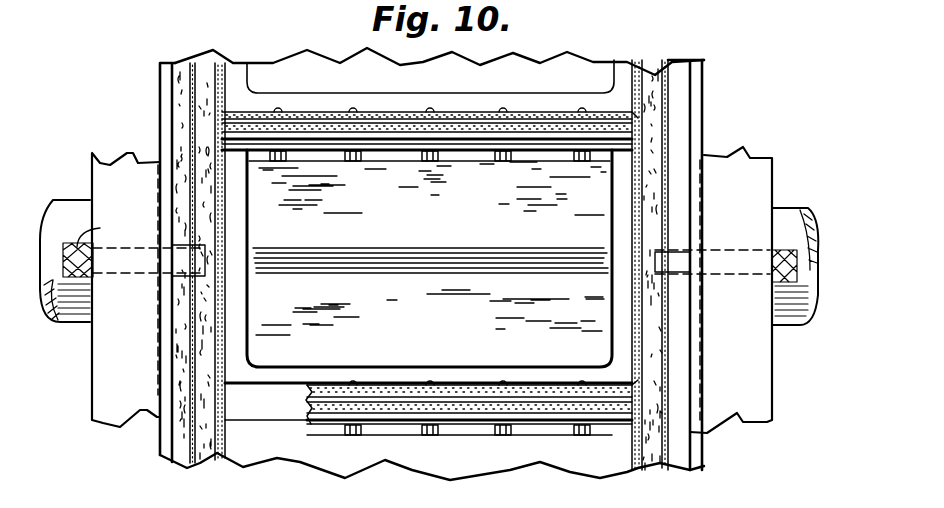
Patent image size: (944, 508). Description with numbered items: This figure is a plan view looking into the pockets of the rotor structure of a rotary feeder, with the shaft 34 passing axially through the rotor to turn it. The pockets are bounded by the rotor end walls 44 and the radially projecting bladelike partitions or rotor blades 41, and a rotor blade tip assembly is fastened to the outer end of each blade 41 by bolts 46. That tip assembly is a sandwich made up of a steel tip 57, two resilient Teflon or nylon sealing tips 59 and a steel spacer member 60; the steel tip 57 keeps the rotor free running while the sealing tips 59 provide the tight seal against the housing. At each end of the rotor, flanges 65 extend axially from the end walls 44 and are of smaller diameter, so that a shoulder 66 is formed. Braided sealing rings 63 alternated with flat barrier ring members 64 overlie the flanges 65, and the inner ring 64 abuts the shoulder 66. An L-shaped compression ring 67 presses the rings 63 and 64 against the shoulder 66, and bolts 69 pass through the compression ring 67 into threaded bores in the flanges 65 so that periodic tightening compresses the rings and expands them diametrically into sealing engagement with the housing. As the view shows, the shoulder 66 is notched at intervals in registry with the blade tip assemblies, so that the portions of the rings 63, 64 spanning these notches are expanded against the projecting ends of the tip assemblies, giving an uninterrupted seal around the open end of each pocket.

The shaft 34 is at (67, 218).
The rotor blade 41 is at (454, 106).
The rotor end wall 44 is at (318, 507).
The bolt 46 is at (353, 163).
The steel tip 57 is at (415, 150).
The sealing tip 59 is at (307, 116).
The spacer member 60 is at (353, 126).
The sealing ring 63 is at (205, 76).
The ring member 64 is at (194, 464).
The flange 65 is at (163, 97).
The shoulder 66 is at (240, 230).
The compression ring 67 is at (106, 358).
The bolt 69 is at (776, 246).